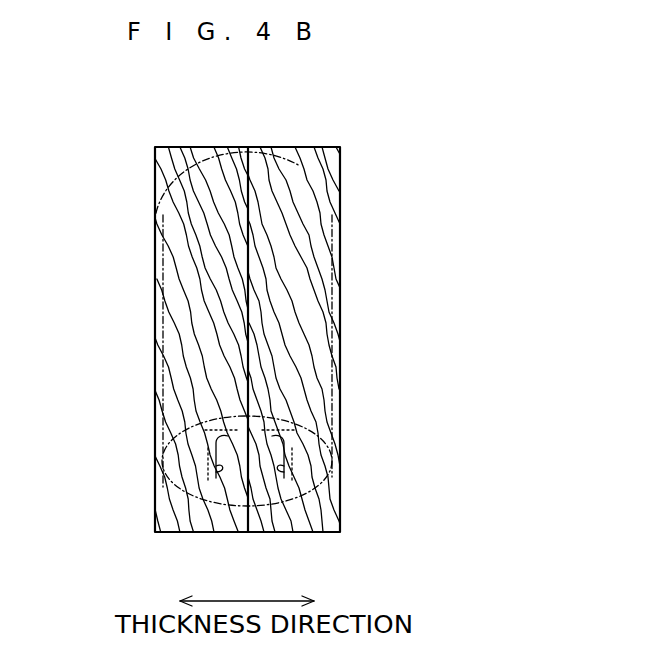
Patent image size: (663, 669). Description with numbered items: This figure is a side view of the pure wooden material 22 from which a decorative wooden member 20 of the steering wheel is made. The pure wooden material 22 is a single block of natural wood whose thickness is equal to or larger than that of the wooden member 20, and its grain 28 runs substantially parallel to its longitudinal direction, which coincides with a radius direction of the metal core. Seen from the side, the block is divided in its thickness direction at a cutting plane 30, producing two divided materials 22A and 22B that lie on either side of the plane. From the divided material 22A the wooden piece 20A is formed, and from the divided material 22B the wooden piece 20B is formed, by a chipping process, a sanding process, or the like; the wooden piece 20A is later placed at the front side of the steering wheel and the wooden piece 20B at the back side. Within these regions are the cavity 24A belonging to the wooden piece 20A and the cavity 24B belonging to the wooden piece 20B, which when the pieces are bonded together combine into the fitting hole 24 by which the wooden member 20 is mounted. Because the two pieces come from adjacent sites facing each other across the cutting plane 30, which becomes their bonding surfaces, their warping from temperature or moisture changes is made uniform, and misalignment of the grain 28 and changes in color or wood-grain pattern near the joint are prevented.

The wooden member 20 is at (313, 174).
The wooden piece 20A is at (333, 356).
The wooden piece 20B is at (158, 334).
The pure wooden material 22 is at (172, 148).
The divided material 22A is at (340, 205).
The divided material 22B is at (155, 252).
The fitting hole 24 is at (273, 505).
The cavity 24A is at (284, 478).
The cavity 24B is at (216, 478).
The grain 28 is at (188, 210).
The cutting plane 30 is at (246, 172).